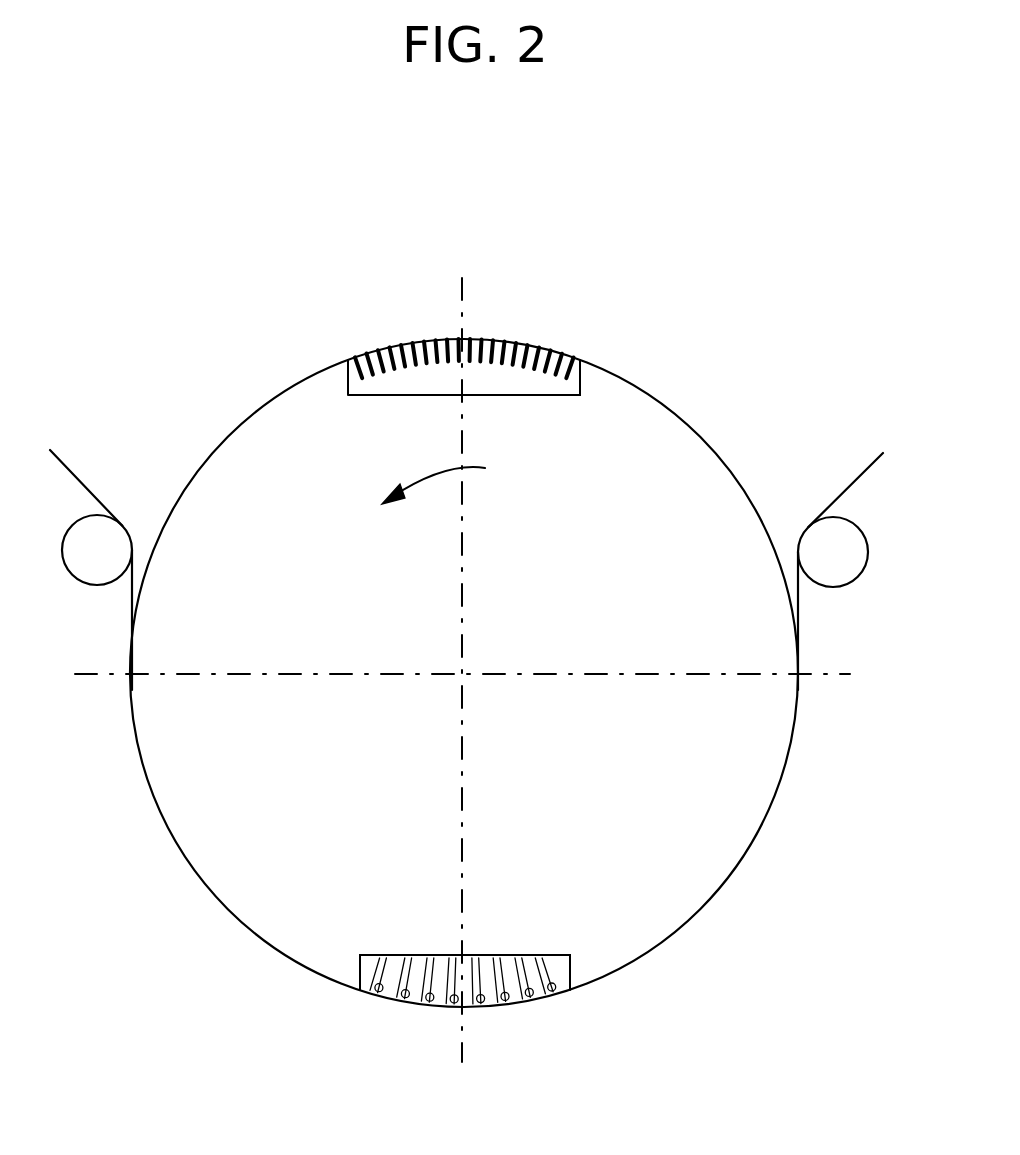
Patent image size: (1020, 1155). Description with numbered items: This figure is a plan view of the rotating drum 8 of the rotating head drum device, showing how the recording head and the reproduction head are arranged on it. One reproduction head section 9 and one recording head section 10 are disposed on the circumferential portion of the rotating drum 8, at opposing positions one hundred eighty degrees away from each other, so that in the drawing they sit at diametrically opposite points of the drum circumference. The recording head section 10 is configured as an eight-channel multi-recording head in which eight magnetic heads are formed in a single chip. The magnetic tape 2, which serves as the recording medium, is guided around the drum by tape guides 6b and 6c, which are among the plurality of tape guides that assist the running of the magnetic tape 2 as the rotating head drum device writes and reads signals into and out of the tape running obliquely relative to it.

The magnetic tape 2 is at (847, 487).
The tape guide 6b is at (863, 573).
The tape guide 6c is at (120, 521).
The rotating drum 8 is at (222, 346).
The reproduction head section 9 is at (507, 343).
The recording head section 10 is at (432, 1007).